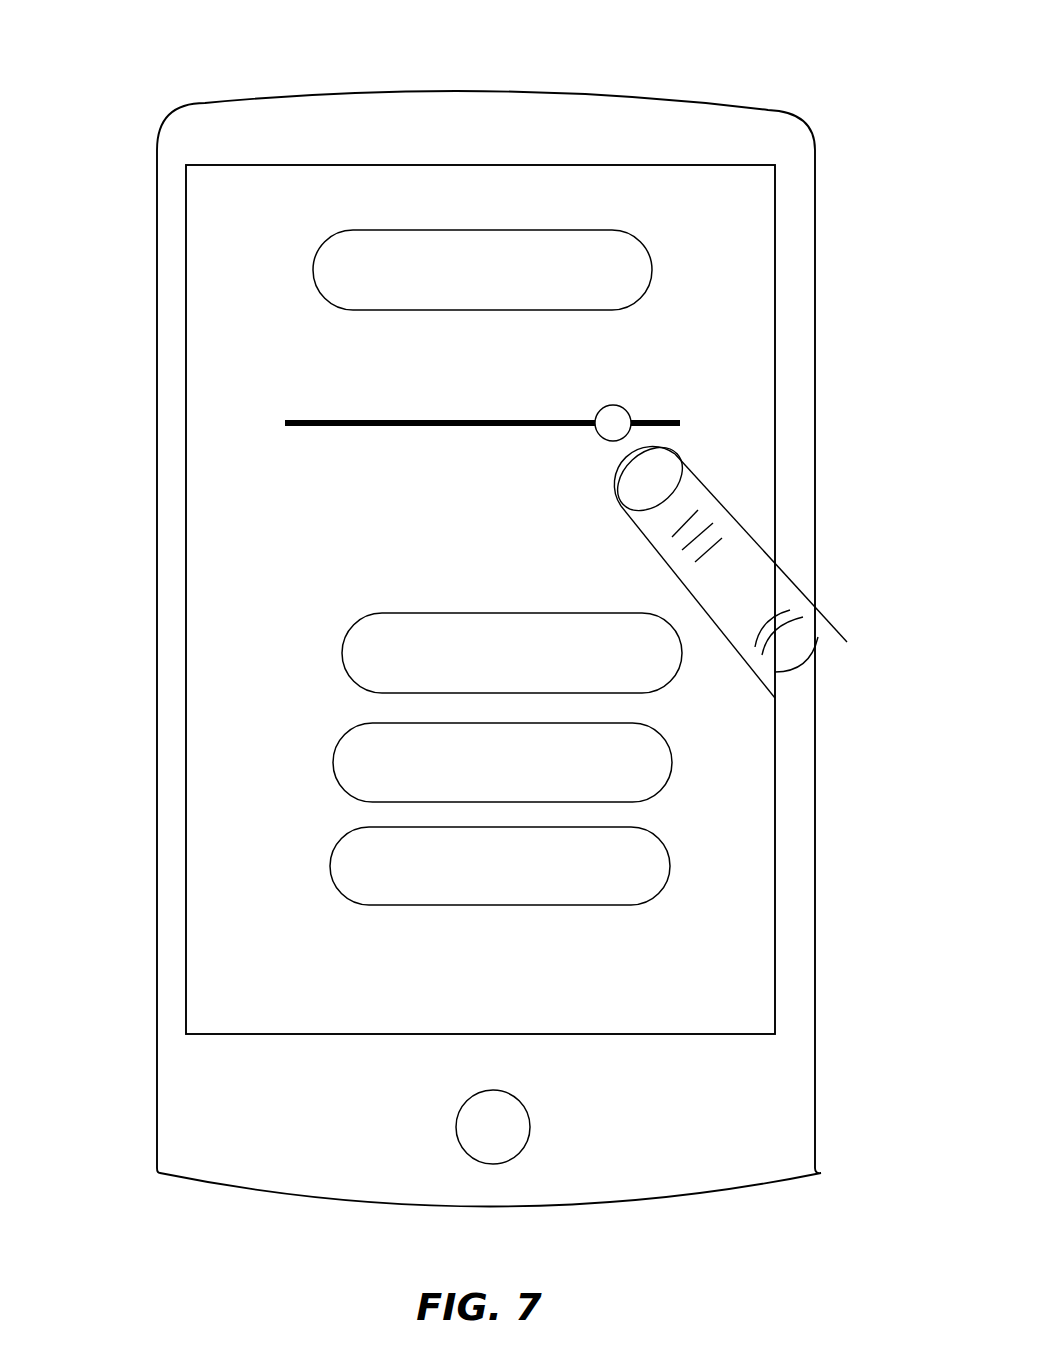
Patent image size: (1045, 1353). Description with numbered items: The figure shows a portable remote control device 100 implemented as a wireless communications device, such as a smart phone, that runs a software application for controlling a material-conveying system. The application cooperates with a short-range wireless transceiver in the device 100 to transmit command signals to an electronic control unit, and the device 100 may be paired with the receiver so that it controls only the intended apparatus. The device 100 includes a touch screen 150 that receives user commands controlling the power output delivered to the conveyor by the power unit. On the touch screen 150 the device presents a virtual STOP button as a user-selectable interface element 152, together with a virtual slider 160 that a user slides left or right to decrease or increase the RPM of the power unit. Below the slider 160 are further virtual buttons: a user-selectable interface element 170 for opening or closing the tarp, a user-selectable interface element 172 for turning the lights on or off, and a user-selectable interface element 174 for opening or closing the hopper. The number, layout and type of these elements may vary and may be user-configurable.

The portable remote control device 100 is at (523, 91).
The touch screen 150 is at (747, 307).
The user-selectable interface element 152 is at (314, 268).
The virtual slider 160 is at (438, 413).
The user-selectable interface element 170 is at (341, 657).
The user-selectable interface element 172 is at (332, 762).
The user-selectable interface element 174 is at (329, 867).